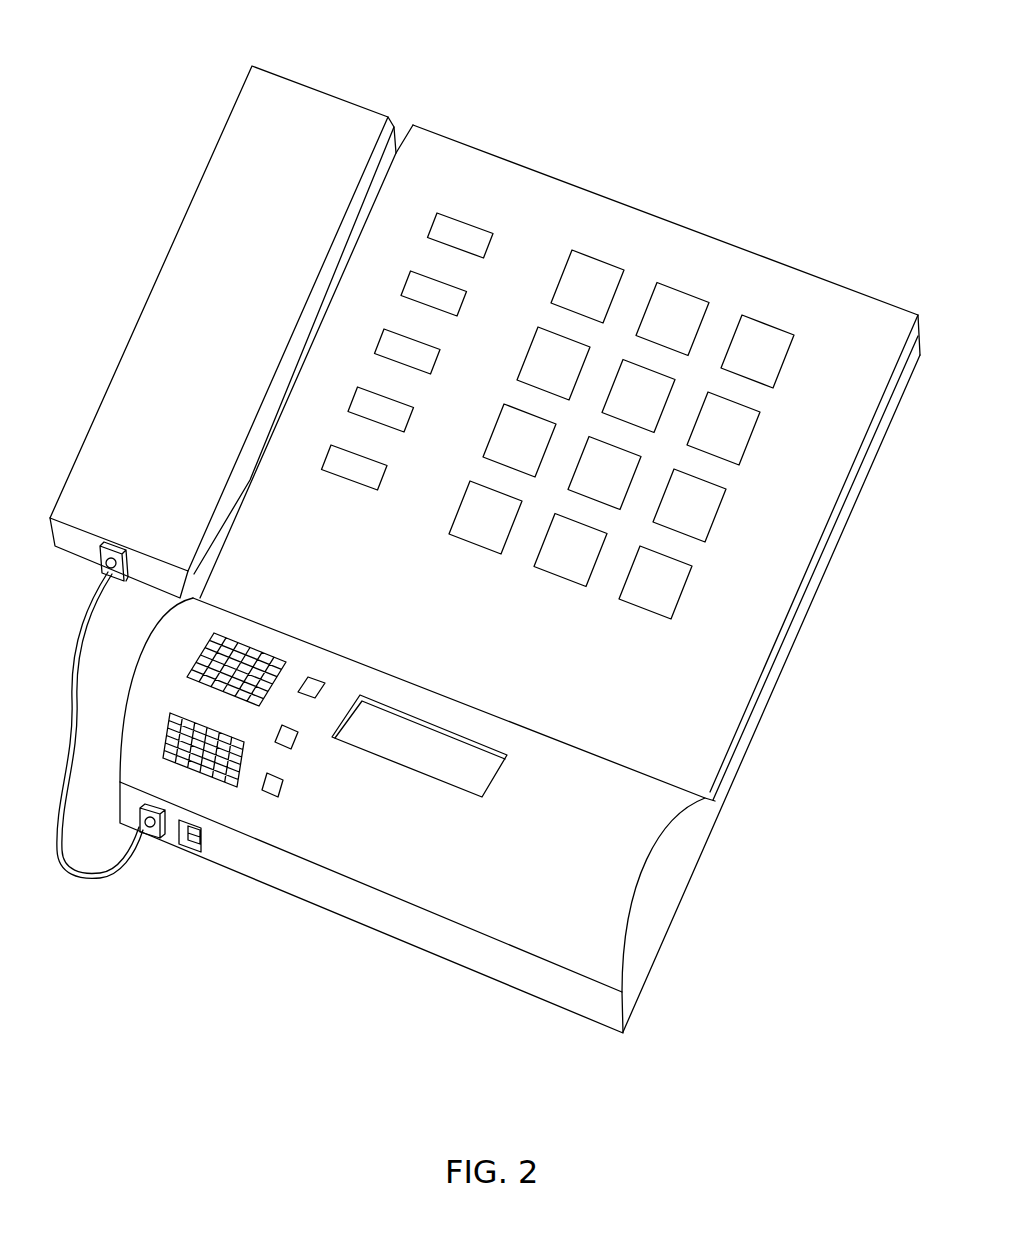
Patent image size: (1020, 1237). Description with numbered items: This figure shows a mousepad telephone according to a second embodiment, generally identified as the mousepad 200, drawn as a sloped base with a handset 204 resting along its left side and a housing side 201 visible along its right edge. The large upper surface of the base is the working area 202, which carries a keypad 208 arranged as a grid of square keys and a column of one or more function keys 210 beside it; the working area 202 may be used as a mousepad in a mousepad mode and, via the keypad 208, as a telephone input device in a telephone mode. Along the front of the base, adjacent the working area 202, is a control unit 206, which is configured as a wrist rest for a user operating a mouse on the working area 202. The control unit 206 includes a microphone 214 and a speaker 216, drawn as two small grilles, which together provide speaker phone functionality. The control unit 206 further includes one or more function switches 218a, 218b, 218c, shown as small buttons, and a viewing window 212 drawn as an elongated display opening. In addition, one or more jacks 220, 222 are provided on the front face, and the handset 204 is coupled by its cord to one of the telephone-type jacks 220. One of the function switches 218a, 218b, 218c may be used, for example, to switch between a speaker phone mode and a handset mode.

The mousepad 200 is at (488, 578).
The housing side 201 is at (810, 565).
The working area 202 is at (725, 238).
The handset 204 is at (320, 85).
The control unit 206 is at (515, 913).
The keypad 208 is at (769, 320).
The function keys 210 is at (464, 214).
The viewing window 212 is at (462, 728).
The microphone 214 is at (258, 647).
The speaker 216 is at (167, 737).
The function switch 218a is at (322, 681).
The function switch 218b is at (297, 743).
The function switch 218c is at (283, 790).
The jack 220 is at (158, 843).
The jack 222 is at (182, 850).